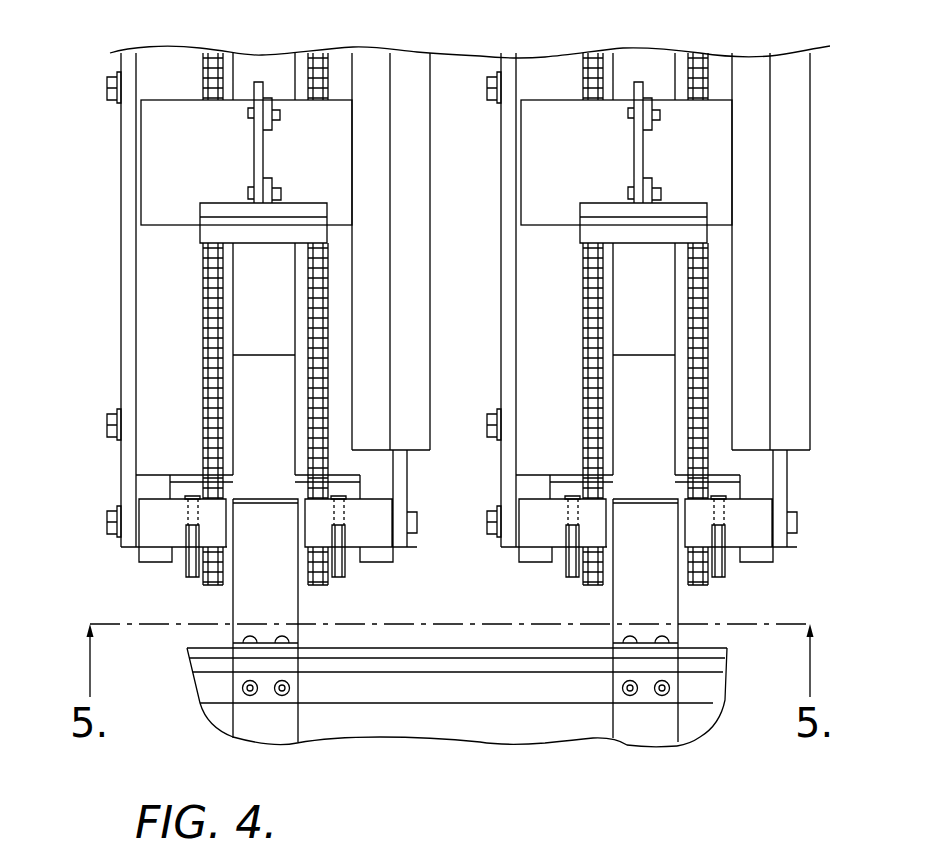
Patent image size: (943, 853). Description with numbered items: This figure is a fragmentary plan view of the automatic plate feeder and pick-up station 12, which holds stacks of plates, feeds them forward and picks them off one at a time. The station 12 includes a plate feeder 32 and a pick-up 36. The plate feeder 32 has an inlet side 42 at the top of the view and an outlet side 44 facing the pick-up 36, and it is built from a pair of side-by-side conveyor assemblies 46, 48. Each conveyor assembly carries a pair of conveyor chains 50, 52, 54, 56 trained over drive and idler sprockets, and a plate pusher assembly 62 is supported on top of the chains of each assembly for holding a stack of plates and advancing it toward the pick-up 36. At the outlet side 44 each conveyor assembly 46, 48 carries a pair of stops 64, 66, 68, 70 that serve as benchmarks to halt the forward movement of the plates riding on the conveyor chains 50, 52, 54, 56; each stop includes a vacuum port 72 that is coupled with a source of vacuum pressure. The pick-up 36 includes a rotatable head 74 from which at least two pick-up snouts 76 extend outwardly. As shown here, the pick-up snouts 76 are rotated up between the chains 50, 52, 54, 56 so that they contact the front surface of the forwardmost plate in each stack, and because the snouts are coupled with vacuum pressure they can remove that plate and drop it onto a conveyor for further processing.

The automatic plate feeder and pick-up station 12 is at (838, 487).
The plate feeder 32 is at (78, 88).
The pick-up 36 is at (415, 755).
The inlet side 42 is at (532, 44).
The outlet side 44 is at (506, 576).
The conveyor assembly 46 is at (110, 262).
The conveyor assembly 48 is at (825, 258).
The conveyor chain 50 is at (213, 400).
The conveyor chain 52 is at (316, 399).
The conveyor chain 54 is at (593, 333).
The conveyor chain 56 is at (697, 367).
The plate pusher assembly 62 is at (155, 183).
The stop 64 is at (153, 518).
The stop 66 is at (373, 515).
The stop 68 is at (541, 511).
The stop 70 is at (752, 537).
The vacuum port 72 is at (190, 572).
The rotatable head 74 is at (518, 725).
The pick-up snout 76 is at (248, 599).